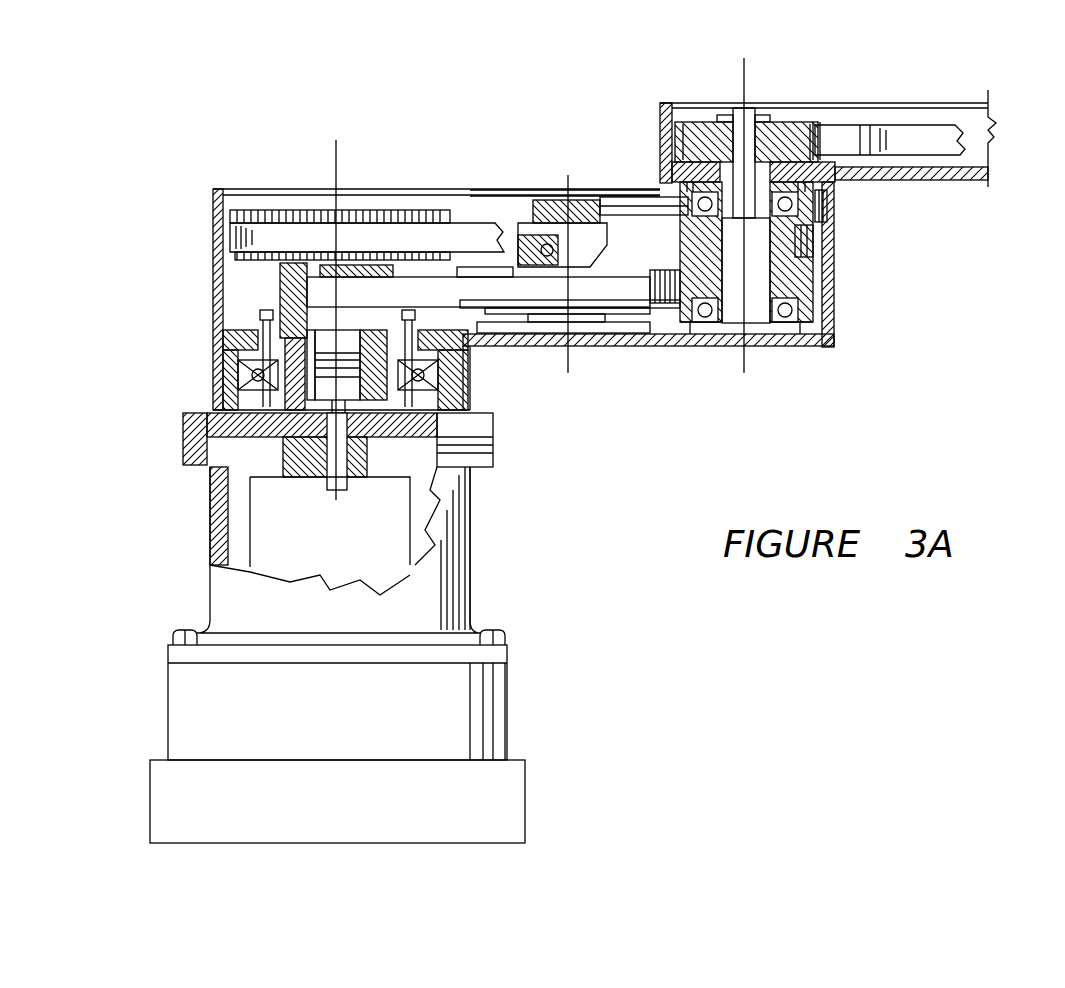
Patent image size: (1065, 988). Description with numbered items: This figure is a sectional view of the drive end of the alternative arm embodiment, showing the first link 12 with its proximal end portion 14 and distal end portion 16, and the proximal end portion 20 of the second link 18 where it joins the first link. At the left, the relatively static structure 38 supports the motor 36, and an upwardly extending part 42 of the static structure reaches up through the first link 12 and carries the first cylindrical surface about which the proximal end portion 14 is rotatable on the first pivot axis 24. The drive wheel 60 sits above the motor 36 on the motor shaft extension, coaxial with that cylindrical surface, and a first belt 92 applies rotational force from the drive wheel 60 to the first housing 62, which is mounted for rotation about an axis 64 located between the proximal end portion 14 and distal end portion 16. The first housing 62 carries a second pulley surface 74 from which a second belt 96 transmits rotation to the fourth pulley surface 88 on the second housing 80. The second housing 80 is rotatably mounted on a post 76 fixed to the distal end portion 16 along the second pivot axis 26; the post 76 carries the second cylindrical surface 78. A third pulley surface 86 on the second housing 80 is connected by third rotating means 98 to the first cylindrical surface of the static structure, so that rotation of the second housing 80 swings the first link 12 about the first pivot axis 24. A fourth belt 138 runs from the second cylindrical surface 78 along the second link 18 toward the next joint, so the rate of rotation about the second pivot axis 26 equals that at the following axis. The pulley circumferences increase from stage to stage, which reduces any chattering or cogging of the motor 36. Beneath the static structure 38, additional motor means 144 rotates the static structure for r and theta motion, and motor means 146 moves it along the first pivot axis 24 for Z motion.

The first link 12 is at (472, 178).
The proximal end portion 14 is at (268, 187).
The distal end portion 16 is at (727, 347).
The second link 18 is at (928, 92).
The proximal end portion 20 is at (693, 97).
The first pivot axis 24 is at (337, 150).
The second pivot axis 26 is at (745, 88).
The motor 36 is at (353, 537).
The relatively static structure 38 is at (480, 555).
The upwardly extending part 42 is at (213, 233).
The drive wheel 60 is at (280, 287).
The first housing 62 is at (533, 240).
The axis 64 is at (568, 178).
The second pulley surface 74 is at (532, 210).
The post 76 is at (757, 275).
The second cylindrical surface 78 is at (663, 135).
The second housing 80 is at (815, 279).
The third pulley surface 86 is at (815, 247).
The fourth pulley surface 88 is at (832, 205).
The first belt 92 is at (430, 293).
The second belt 96 is at (638, 210).
The third rotating means 98 is at (470, 230).
The fourth belt 138 is at (913, 147).
The additional motor means 144 is at (362, 722).
The motor means 146 is at (362, 807).